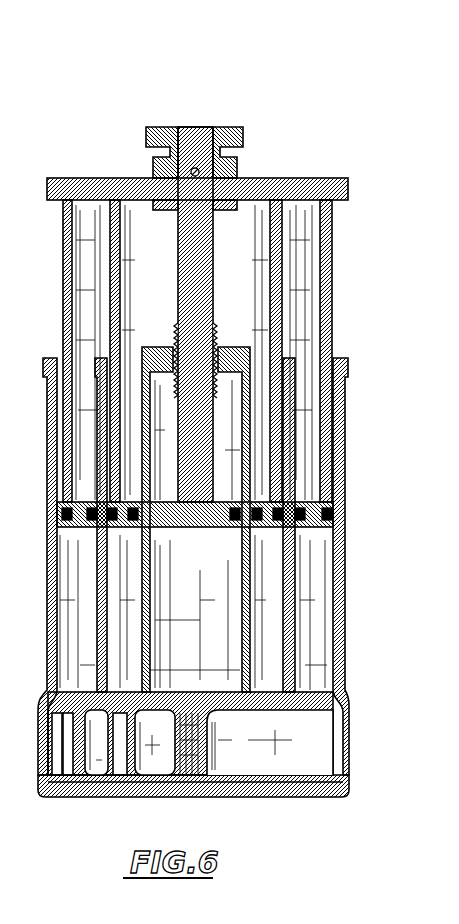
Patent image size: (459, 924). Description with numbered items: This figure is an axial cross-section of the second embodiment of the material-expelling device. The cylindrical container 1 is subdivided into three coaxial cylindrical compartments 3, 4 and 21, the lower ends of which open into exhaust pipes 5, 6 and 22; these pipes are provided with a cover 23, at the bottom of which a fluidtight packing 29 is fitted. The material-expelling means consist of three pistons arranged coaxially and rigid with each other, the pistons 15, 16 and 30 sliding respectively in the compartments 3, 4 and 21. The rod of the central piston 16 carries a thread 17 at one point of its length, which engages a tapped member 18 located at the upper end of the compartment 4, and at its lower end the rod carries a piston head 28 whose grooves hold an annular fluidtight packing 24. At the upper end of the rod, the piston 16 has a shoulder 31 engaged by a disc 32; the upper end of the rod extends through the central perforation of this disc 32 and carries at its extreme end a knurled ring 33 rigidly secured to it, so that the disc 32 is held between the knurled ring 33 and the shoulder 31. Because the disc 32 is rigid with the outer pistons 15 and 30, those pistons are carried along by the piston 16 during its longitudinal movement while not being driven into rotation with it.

The cylindrical container 1 is at (337, 653).
The compartment 3 is at (275, 525).
The compartment 4 is at (167, 525).
The exhaust pipe 5 is at (123, 737).
The exhaust pipe 6 is at (200, 762).
The piston 15 is at (275, 303).
The piston 16 is at (207, 253).
The thread 17 is at (212, 333).
The tapped member 18 is at (240, 348).
The compartment 21 is at (198, 612).
The exhaust pipe 22 is at (73, 743).
The cover 23 is at (209, 787).
The annular fluidtight packing 24 is at (233, 522).
The piston head 28 is at (202, 517).
The fluidtight packing 29 is at (305, 773).
The piston 30 is at (325, 292).
The shoulder 31 is at (163, 208).
The disc 32 is at (283, 178).
The knurled ring 33 is at (226, 131).